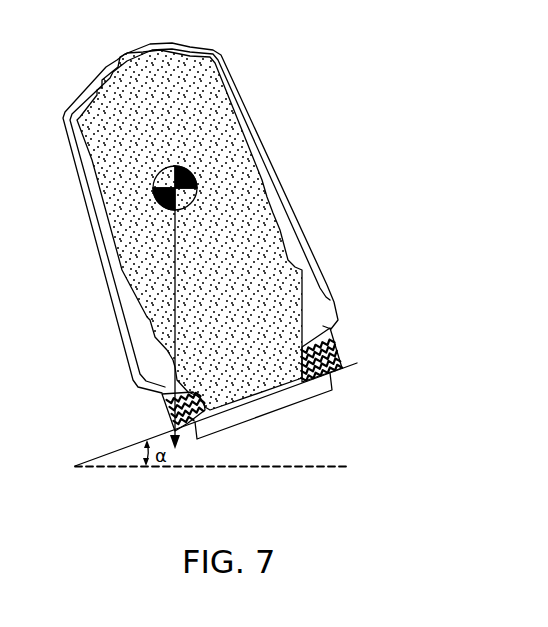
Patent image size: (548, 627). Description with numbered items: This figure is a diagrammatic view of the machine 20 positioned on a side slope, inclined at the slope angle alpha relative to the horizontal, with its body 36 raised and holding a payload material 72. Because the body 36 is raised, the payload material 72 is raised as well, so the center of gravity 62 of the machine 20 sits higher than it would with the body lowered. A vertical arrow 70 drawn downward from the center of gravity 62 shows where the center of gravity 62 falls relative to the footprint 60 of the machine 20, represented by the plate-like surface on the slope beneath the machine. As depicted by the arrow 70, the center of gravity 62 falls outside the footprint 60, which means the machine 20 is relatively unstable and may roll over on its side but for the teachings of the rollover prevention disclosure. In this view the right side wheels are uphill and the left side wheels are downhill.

The machine 20 is at (306, 37).
The body 36 is at (88, 82).
The payload material 72 is at (190, 92).
The center of gravity 62 is at (197, 203).
The arrow 70 is at (175, 317).
The footprint 60 is at (287, 407).